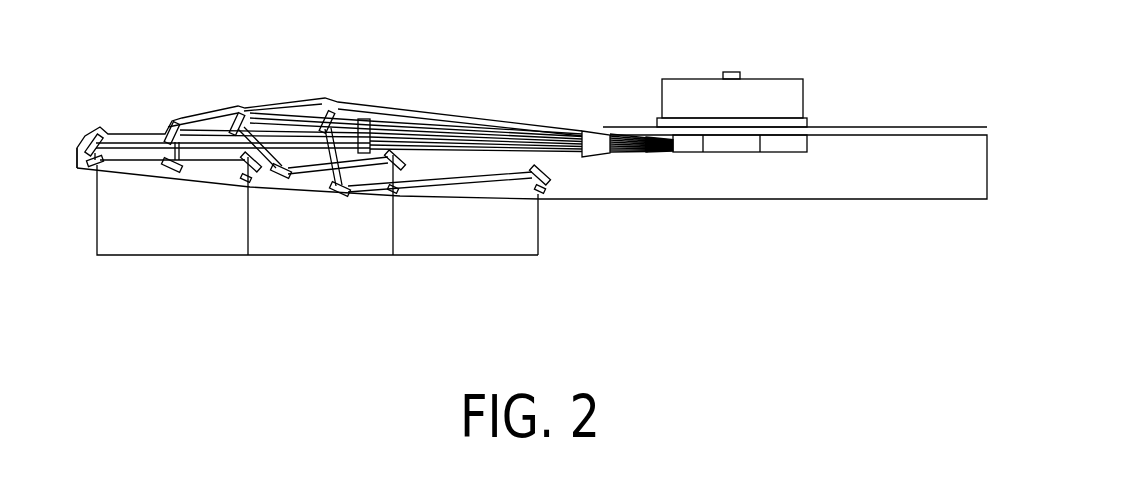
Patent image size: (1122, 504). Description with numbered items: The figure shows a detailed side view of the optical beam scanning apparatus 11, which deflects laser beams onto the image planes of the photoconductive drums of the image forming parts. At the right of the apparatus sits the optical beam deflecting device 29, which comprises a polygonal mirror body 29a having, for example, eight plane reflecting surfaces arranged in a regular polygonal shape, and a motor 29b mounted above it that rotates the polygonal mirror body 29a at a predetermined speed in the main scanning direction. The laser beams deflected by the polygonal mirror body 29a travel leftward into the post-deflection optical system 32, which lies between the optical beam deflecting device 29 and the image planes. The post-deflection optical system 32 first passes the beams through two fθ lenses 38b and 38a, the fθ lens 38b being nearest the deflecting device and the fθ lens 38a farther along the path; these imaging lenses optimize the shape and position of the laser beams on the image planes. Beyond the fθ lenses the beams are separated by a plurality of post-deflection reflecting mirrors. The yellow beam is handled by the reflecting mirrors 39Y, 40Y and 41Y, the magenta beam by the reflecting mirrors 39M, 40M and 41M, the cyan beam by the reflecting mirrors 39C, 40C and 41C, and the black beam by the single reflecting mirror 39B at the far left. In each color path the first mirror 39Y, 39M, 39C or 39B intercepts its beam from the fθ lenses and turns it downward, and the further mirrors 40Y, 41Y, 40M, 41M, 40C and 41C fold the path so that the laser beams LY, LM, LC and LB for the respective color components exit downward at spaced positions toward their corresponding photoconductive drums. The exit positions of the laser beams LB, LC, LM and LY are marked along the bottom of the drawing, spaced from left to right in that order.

The post-deflection optical system 32 is at (496, 29).
The optical beam scanning apparatus 11 is at (921, 126).
The optical beam deflecting device 29 is at (777, 70).
The polygonal mirror body 29a is at (808, 146).
The motor 29b is at (805, 97).
The fθ lens 38a is at (366, 118).
The fθ lens 38b is at (596, 130).
The post-deflection reflecting mirror 39B is at (88, 133).
The post-deflection reflecting mirror 39C is at (172, 118).
The post-deflection reflecting mirror 39M is at (238, 110).
The post-deflection reflecting mirror 39Y is at (323, 110).
The post-deflection reflecting mirror 40C is at (165, 172).
The post-deflection reflecting mirror 41C is at (245, 162).
The post-deflection reflecting mirror 40M is at (279, 180).
The post-deflection reflecting mirror 40Y is at (338, 199).
The post-deflection reflecting mirror 41M is at (402, 170).
The post-deflection reflecting mirror 41Y is at (550, 170).
The laser beam LB is at (310, 226).
The laser beam LC is at (249, 222).
The laser beam LM is at (395, 221).
The laser beam LY is at (537, 240).